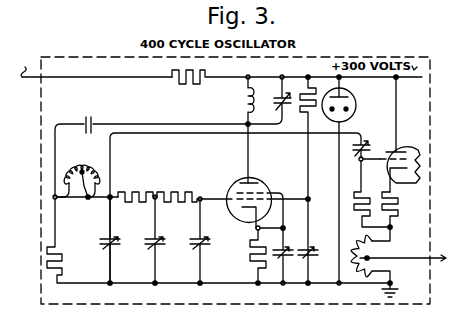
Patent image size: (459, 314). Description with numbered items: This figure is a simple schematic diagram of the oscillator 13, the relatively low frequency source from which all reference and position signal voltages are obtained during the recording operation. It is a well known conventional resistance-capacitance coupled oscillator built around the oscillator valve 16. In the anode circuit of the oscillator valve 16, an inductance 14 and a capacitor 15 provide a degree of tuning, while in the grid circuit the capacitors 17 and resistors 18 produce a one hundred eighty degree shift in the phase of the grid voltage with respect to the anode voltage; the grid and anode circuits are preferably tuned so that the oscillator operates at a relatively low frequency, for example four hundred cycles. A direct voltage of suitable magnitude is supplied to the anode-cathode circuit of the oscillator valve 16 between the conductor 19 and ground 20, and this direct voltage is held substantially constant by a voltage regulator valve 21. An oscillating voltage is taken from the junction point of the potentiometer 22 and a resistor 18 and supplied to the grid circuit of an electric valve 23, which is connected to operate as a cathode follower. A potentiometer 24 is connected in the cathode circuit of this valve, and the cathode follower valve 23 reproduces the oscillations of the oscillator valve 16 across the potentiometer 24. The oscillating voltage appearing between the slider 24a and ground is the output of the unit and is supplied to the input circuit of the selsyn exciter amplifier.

The oscillator 13 is at (431, 88).
The inductance 14 is at (244, 99).
The capacitor 15 is at (278, 108).
The oscillator valve 16 is at (262, 186).
The capacitors 17 is at (193, 243).
The resistors 18 is at (167, 193).
The conductor 19 is at (218, 69).
The ground 20 is at (382, 292).
The voltage regulator valve 21 is at (357, 97).
The potentiometer 22 is at (80, 161).
The electric valve 23 is at (404, 147).
The potentiometer 24 is at (360, 246).
The slider 24a is at (392, 262).